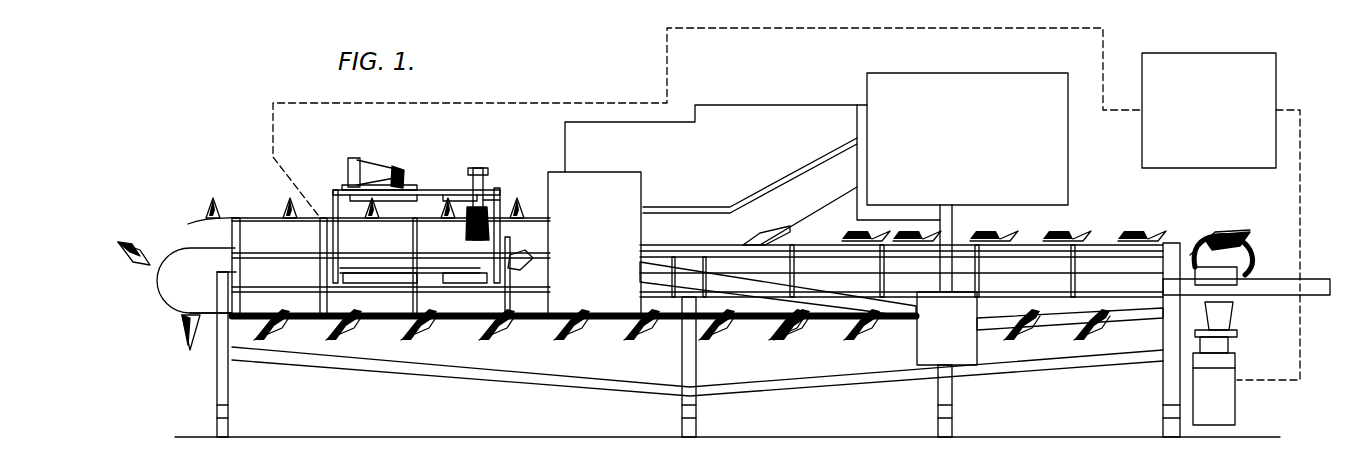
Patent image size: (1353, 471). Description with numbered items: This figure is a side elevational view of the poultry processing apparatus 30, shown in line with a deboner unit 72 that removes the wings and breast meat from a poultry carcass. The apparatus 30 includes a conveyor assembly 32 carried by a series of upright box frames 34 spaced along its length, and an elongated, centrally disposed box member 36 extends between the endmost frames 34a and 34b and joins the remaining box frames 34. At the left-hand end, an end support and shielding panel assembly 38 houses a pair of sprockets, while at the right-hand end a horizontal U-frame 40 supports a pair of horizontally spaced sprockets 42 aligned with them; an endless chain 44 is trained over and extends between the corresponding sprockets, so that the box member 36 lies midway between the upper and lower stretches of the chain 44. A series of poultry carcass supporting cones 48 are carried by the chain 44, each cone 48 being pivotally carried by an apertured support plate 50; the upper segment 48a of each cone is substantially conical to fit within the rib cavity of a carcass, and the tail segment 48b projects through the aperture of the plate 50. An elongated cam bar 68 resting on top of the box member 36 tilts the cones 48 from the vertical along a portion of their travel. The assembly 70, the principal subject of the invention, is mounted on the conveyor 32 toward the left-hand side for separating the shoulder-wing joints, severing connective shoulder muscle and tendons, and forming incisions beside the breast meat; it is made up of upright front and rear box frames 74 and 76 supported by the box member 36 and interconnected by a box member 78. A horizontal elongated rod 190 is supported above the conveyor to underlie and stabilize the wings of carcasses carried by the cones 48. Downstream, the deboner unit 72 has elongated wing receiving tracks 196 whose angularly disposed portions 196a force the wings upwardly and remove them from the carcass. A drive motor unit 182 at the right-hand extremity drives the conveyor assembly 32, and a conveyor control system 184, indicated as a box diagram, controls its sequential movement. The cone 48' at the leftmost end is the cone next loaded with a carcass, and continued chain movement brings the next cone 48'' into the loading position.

The poultry processing apparatus 30 is at (253, 148).
The conveyor assembly 32 is at (163, 315).
The upright box frames 34 is at (687, 392).
The endmost frame 34a is at (228, 390).
The endmost frame 34b is at (1167, 392).
The box member 36 is at (350, 287).
The end support and shielding panel assembly 38 is at (177, 248).
The horizontal U-frame 40 is at (1283, 287).
The sprockets 42 is at (1240, 252).
The endless chain 44 is at (533, 322).
The poultry carcass supporting cones 48 is at (865, 366).
The upper segment 48a is at (775, 350).
The tail segment 48b is at (530, 268).
The cone 48' is at (128, 292).
The cone 48'' is at (171, 359).
The apertured support plate 50 is at (540, 242).
The cam bar 68 is at (448, 273).
The assembly 70 is at (410, 163).
The deboner unit 72 is at (767, 98).
The front box frame 74 is at (330, 197).
The rear box frame 76 is at (505, 200).
The box member 78 is at (445, 193).
The drive motor unit 182 is at (1220, 402).
The conveyor control system 184 is at (1228, 62).
The horizontal elongated rod 190 is at (263, 217).
The wing receiving tracks 196 is at (667, 207).
The angularly disposed portions 196a is at (753, 193).